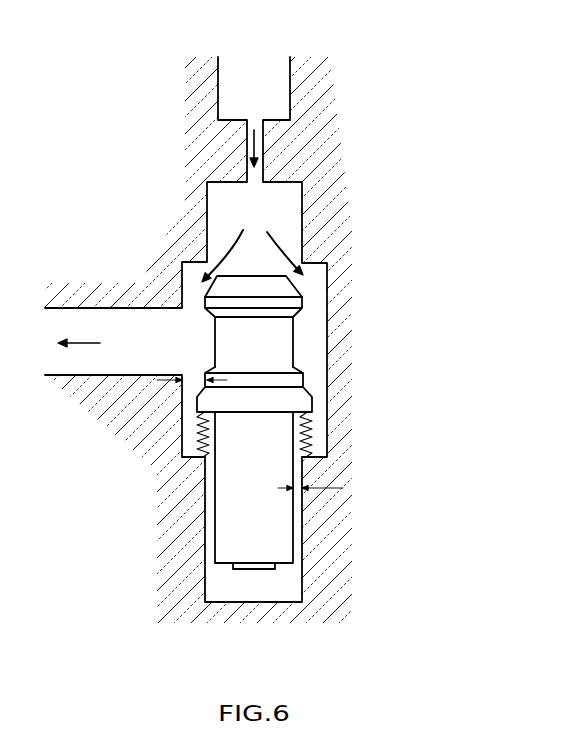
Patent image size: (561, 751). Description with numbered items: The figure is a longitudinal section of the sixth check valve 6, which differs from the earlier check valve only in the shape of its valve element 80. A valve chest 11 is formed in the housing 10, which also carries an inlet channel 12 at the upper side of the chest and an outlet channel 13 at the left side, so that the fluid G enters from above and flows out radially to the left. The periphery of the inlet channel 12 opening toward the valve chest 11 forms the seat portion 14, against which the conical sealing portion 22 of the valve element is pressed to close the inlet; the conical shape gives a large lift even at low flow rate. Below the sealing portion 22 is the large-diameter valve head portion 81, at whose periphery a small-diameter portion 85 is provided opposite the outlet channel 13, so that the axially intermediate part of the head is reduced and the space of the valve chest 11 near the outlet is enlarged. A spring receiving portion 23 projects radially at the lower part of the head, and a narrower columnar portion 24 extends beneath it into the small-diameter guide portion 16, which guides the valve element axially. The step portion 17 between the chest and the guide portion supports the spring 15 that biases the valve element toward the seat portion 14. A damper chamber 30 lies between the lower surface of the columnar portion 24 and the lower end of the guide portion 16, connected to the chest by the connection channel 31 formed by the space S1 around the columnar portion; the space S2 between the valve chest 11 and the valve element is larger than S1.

The sixth check valve 6 is at (280, 375).
The housing 10 is at (385, 399).
The valve chest 11 is at (308, 464).
The inlet channel 12 is at (268, 213).
The outlet channel 13 is at (130, 323).
The seat portion 14 is at (290, 256).
The spring 15 is at (312, 452).
The guide portion 16 is at (207, 592).
The step portion 17 is at (203, 455).
The sealing portion 22 is at (298, 283).
The spring receiving portion 23 is at (310, 422).
The columnar portion 24 is at (263, 508).
The damper chamber 30 is at (308, 542).
The connection channel 31 is at (302, 548).
The valve element 80 is at (227, 469).
The valve head portion 81 is at (300, 297).
The small-diameter portion 85 is at (262, 352).
The fluid G is at (225, 258).
The space of the connection channel S1 is at (325, 488).
The space between the valve chest and the valve element S2 is at (193, 380).